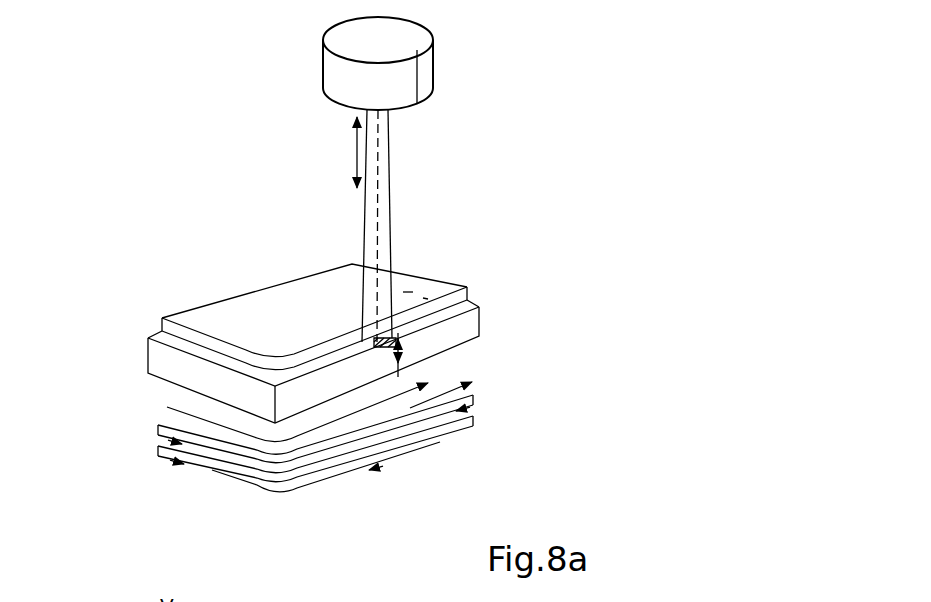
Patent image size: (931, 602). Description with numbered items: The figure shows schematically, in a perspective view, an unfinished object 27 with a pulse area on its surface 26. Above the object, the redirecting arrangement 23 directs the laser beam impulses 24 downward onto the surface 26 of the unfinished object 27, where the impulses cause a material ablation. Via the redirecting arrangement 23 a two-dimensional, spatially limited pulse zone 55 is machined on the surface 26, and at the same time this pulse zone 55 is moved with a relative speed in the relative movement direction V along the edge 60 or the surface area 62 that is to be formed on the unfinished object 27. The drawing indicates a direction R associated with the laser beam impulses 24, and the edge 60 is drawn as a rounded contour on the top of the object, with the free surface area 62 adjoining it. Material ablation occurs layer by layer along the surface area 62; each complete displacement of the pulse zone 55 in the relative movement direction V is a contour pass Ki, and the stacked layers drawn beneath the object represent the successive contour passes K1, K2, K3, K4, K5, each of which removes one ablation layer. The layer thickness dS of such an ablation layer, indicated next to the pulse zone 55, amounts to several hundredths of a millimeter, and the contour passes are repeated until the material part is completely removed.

The redirecting arrangement 23 is at (407, 78).
The laser beam impulses 24 is at (390, 192).
The surface 26 is at (438, 318).
The unfinished object 27 is at (167, 362).
The pulse zone 55 is at (398, 348).
The edge 60 is at (313, 338).
The surface area 62 is at (240, 353).
The direction of beam R is at (353, 153).
The layer thickness dS is at (397, 362).
The relative movement direction V is at (153, 402).
The contour pass Ki is at (505, 405).
The contour pass K1 is at (331, 446).
The contour pass K2 is at (222, 461).
The contour pass K3 is at (431, 423).
The contour pass K4 is at (280, 495).
The contour pass K5 is at (407, 450).